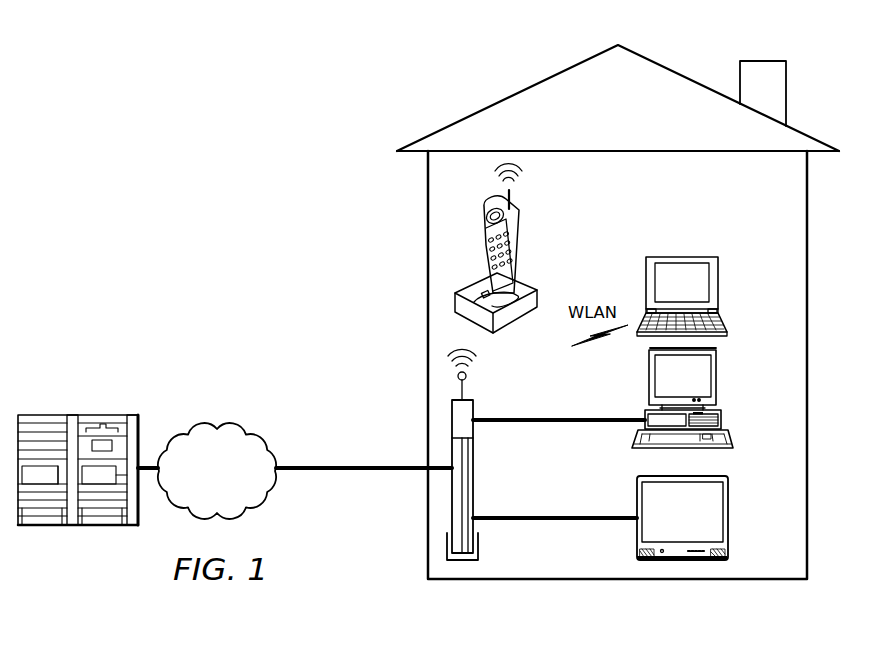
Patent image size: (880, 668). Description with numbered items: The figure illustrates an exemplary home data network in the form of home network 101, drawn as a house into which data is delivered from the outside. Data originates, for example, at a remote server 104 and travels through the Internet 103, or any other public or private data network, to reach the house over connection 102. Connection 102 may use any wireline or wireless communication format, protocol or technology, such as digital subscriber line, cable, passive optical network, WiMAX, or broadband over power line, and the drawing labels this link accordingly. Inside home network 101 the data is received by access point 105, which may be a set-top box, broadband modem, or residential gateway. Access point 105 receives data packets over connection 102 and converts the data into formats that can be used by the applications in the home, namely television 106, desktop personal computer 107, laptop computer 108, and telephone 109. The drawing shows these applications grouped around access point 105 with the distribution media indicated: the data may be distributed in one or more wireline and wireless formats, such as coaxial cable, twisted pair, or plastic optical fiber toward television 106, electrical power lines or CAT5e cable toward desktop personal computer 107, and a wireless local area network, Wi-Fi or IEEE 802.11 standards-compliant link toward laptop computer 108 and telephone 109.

The home network 101 is at (681, 73).
The connection 102 is at (353, 470).
The Internet 103 is at (218, 428).
The remote server 104 is at (72, 415).
The access point 105 is at (473, 453).
The television 106 is at (728, 523).
The desktop personal computer 107 is at (716, 377).
The laptop computer 108 is at (682, 257).
The telephone 109 is at (518, 242).